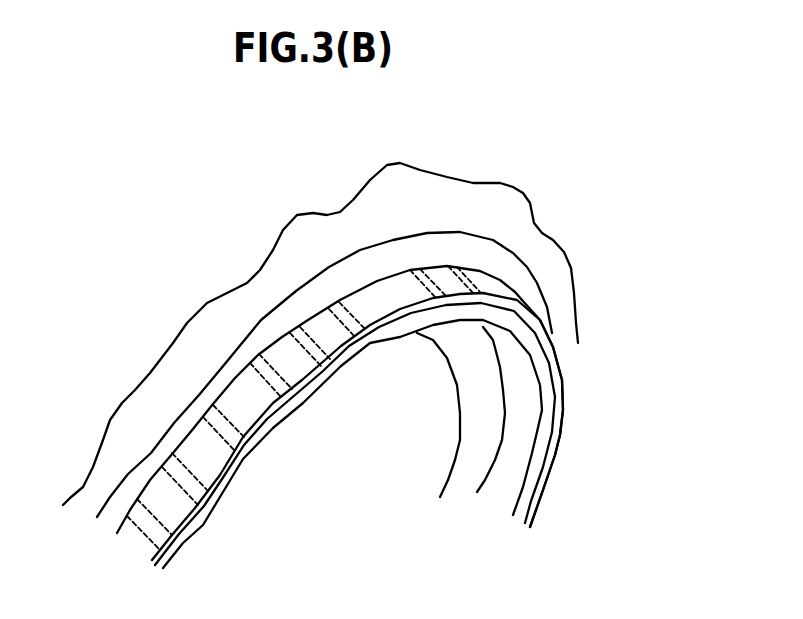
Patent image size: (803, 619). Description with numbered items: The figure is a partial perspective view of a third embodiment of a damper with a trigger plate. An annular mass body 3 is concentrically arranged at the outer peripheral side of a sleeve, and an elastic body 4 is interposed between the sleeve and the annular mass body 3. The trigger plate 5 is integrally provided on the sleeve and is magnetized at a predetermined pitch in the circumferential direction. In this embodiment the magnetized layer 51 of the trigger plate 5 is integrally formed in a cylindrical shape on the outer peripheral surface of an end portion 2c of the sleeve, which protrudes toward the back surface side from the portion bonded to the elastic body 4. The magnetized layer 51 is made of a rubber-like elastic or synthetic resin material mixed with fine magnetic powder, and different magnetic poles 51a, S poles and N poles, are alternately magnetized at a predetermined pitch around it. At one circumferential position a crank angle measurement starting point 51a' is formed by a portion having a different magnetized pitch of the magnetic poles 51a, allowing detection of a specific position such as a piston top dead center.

The annular mass body 3 is at (320, 292).
The elastic body 4 is at (360, 339).
The magnetized layer 51 is at (340, 390).
The magnetic poles 51a is at (217, 426).
The crank angle measurement starting point 51a' is at (394, 211).
The end portion 2c is at (407, 432).
The trigger plate 5 is at (603, 413).